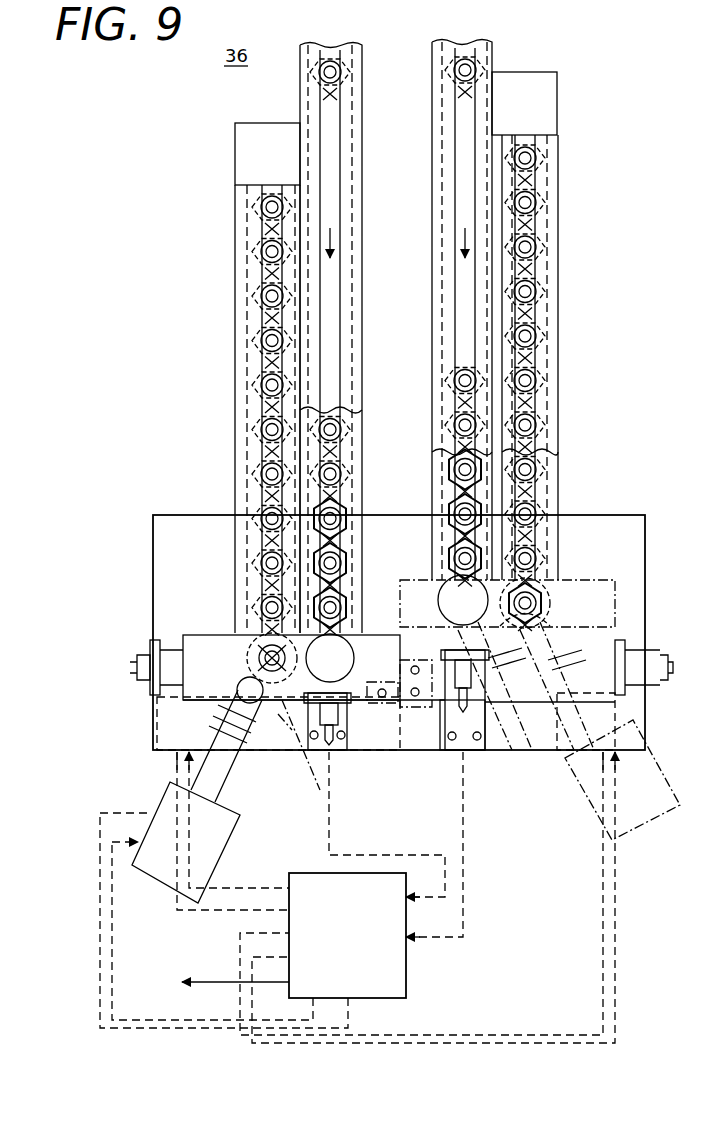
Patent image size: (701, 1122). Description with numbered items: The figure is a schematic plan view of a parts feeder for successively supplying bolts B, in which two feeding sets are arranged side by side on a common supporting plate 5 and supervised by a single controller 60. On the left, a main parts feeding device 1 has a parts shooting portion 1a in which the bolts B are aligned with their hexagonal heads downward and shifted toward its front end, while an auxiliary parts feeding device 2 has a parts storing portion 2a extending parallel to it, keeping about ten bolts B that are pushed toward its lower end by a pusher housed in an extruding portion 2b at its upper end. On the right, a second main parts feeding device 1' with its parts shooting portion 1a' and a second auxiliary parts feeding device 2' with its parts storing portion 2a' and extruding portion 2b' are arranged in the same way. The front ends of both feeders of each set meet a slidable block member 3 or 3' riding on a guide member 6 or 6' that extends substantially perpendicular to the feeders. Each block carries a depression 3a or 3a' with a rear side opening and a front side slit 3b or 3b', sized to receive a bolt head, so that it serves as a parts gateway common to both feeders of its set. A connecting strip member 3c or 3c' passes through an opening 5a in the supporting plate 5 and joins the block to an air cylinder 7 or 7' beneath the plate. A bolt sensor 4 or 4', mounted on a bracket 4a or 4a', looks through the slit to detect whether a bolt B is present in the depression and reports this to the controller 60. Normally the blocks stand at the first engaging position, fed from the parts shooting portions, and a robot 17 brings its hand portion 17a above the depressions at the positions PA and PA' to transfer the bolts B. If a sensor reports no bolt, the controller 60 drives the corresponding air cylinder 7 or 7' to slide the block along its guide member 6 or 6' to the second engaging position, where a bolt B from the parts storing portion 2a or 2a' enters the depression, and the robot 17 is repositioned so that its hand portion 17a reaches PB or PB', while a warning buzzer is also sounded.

The main parts feeding device 1 is at (312, 321).
The parts shooting portion 1a is at (350, 54).
The main parts feeding device 1' is at (489, 293).
The parts shooting portion 1a' is at (445, 53).
The auxiliary parts feeding device 2 is at (234, 409).
The parts storing portion 2a is at (236, 415).
The extruding portion 2b is at (240, 154).
The auxiliary parts feeding device 2' is at (558, 357).
The parts storing portion 2a' is at (557, 366).
The extruding portion 2b' is at (555, 96).
The bolt B is at (270, 516).
The slidable block member 3 is at (261, 658).
The depression 3a is at (248, 629).
The front side slit 3b is at (220, 739).
The connecting strip member 3c is at (360, 744).
The slidable block member 3' is at (540, 603).
The depression 3a' is at (591, 589).
The front side slit 3b' is at (535, 686).
The connecting strip member 3c' is at (416, 722).
The bolt sensor 4 is at (331, 739).
The bracket 4a is at (318, 744).
The bolt sensor 4' is at (463, 727).
The bracket 4a' is at (490, 732).
The supporting plate 5 is at (612, 522).
The opening 5a is at (494, 732).
The guide member 6 is at (150, 683).
The guide member 6' is at (645, 675).
The air cylinder 7 is at (137, 764).
The air cylinder 7' is at (622, 780).
The robot 17 is at (312, 742).
The hand portion 17a is at (255, 650).
The controller 60 is at (406, 976).
The position PA is at (369, 824).
The position PB is at (194, 831).
The position PA' is at (473, 844).
The position PB' is at (427, 897).